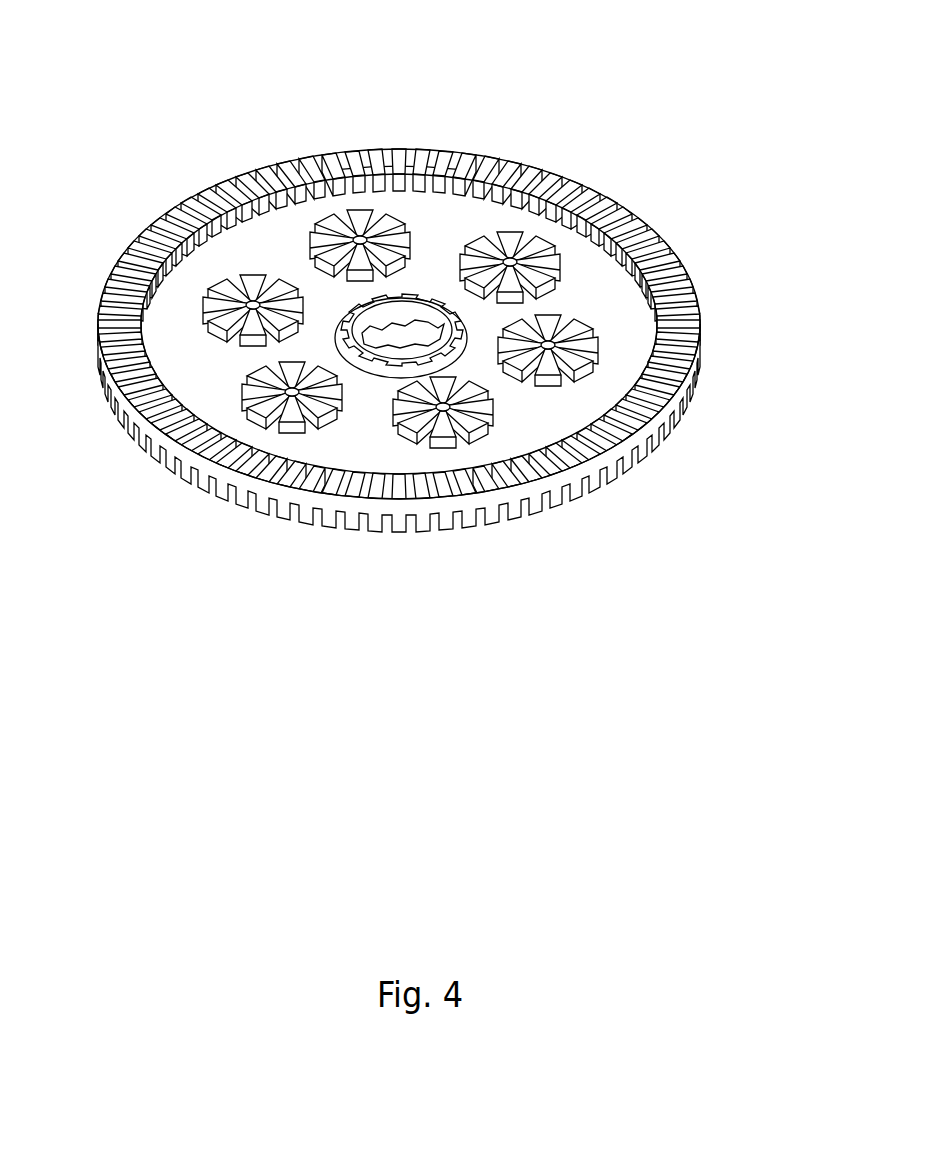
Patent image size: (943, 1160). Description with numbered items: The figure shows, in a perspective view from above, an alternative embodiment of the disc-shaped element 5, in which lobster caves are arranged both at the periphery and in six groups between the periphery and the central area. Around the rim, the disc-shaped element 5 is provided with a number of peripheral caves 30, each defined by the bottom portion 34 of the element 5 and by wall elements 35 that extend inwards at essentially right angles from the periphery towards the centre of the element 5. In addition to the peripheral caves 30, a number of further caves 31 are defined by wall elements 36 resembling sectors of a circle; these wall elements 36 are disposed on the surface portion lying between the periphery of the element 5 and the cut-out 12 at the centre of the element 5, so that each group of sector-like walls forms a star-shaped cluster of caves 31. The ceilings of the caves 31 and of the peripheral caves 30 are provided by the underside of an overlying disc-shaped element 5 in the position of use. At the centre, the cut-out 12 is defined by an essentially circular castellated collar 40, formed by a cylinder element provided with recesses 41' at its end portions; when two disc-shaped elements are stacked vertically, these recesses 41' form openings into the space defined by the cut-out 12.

The disc-shaped element 5 is at (447, 365).
The cut-out 12 is at (397, 343).
The peripheral caves 30 is at (632, 356).
The caves 31 is at (392, 212).
The bottom portion 34 is at (605, 307).
The wall elements 35 is at (627, 455).
The wall elements 36 is at (510, 237).
The castellated collar 40 is at (370, 357).
The recesses 41' is at (266, 258).